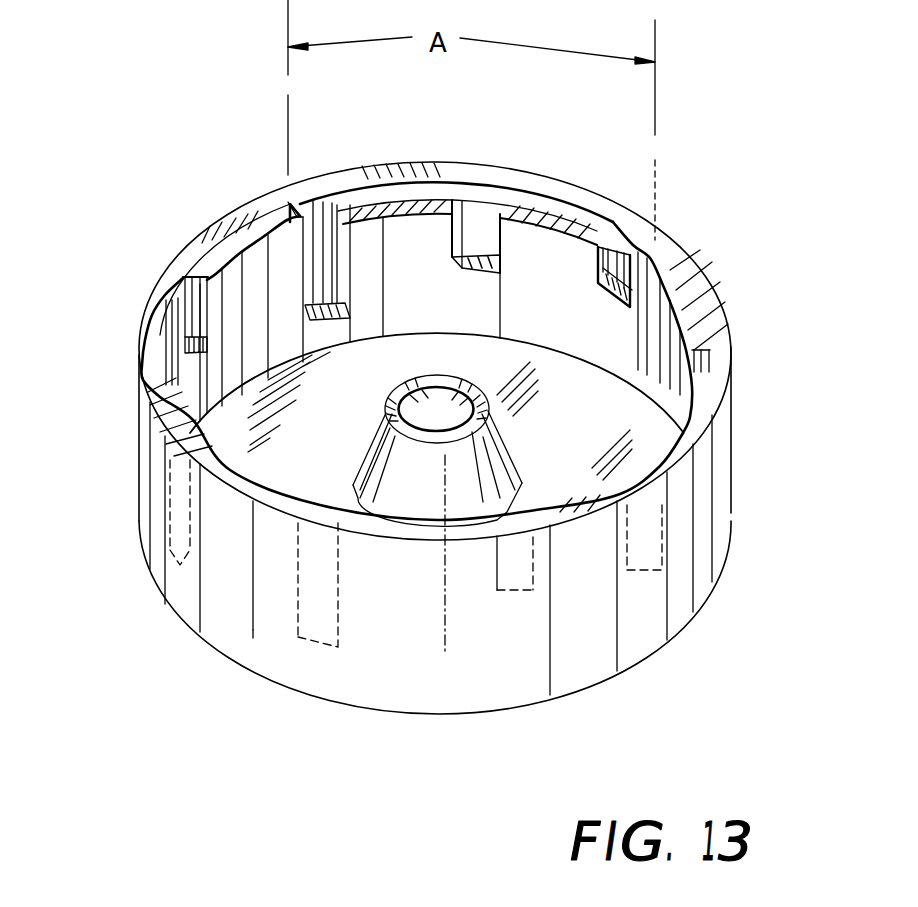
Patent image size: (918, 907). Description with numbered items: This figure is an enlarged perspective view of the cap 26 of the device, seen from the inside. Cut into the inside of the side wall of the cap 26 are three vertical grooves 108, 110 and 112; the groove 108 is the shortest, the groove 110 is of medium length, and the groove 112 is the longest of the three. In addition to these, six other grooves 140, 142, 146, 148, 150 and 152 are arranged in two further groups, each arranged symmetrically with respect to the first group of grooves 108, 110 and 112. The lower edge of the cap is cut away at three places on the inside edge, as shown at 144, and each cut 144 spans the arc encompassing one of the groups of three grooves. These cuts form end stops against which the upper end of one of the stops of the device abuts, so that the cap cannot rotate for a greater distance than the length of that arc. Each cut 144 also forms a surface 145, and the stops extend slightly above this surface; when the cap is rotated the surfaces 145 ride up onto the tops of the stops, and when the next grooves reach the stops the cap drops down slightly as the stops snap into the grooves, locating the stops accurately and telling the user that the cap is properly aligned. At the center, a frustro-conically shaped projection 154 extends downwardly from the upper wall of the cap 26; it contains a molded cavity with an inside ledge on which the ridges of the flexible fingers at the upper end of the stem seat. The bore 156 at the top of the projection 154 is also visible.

The cap 26 is at (730, 460).
The groove 108 is at (624, 268).
The groove 110 is at (483, 230).
The groove 112 is at (323, 233).
The groove 140 is at (177, 303).
The groove 142 is at (140, 467).
The cut 144 is at (437, 190).
The surface 145 is at (390, 210).
The groove 146 is at (297, 620).
The groove 148 is at (537, 570).
The groove 150 is at (647, 577).
The groove 152 is at (710, 367).
The frustro-conically shaped projection 154 is at (513, 457).
The central bore 156 is at (460, 393).